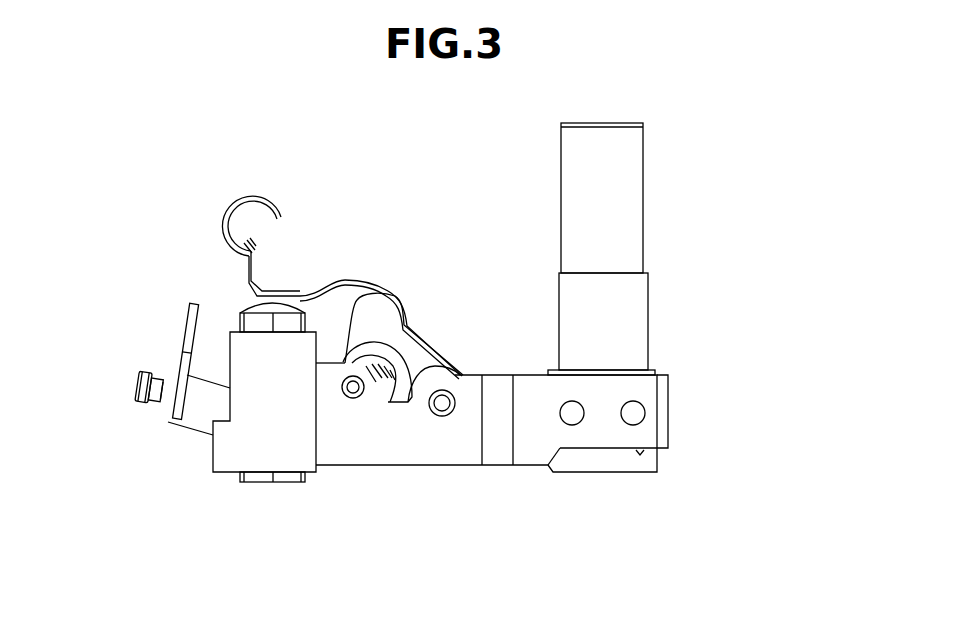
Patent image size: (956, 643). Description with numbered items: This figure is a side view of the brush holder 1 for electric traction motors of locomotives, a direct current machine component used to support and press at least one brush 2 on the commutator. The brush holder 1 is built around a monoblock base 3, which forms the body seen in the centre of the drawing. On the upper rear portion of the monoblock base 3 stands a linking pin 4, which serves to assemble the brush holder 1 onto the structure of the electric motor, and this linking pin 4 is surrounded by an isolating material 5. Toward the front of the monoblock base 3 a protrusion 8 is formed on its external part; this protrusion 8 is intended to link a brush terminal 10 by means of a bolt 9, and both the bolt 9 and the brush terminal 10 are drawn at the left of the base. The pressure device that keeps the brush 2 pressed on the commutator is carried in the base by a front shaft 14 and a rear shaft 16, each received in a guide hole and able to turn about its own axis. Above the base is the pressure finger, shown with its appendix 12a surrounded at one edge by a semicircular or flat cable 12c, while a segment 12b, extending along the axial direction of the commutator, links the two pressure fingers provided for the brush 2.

The brush holder 1 is at (712, 438).
The brush 2 is at (255, 482).
The monoblock base 3 is at (532, 383).
The linking pin 4 is at (617, 216).
The isolating material 5 is at (623, 315).
The protrusion 8 is at (193, 415).
The bolt 9 is at (136, 392).
The brush terminal 10 is at (175, 333).
The appendix 12a is at (240, 287).
The segment 12b is at (254, 257).
The semicircular or flat cable 12c is at (233, 202).
The front shaft 14 is at (353, 398).
The rear shaft 16 is at (441, 405).